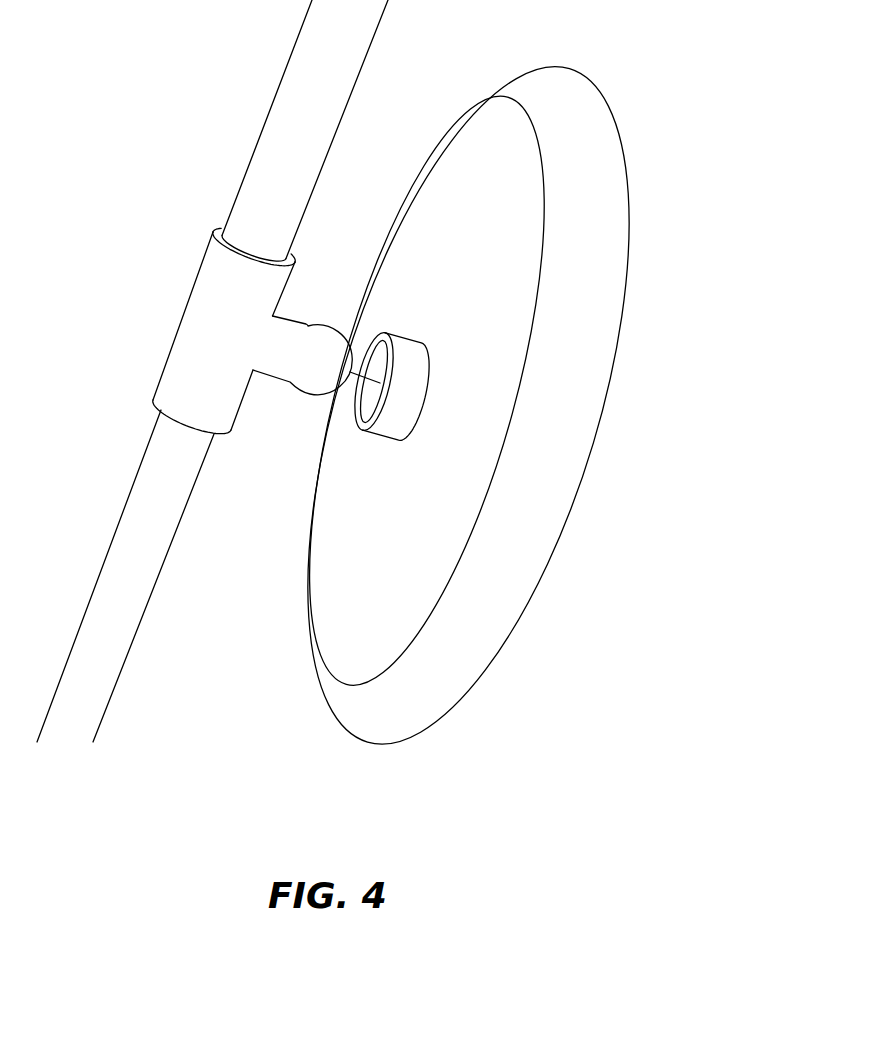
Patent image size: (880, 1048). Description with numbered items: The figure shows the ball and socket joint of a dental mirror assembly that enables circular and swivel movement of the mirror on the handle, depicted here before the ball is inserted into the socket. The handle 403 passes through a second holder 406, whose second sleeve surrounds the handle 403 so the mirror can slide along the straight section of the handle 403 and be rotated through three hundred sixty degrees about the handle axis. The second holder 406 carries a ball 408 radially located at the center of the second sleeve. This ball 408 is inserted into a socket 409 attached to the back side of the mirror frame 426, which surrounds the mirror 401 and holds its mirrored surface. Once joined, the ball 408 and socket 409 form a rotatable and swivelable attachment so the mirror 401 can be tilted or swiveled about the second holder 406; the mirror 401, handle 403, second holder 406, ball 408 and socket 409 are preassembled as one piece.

The mirror 401 is at (490, 401).
The handle 403 is at (305, 103).
The second holder 406 is at (197, 365).
The ball 408 is at (315, 358).
The socket 409 is at (398, 402).
The mirror frame 426 is at (537, 527).